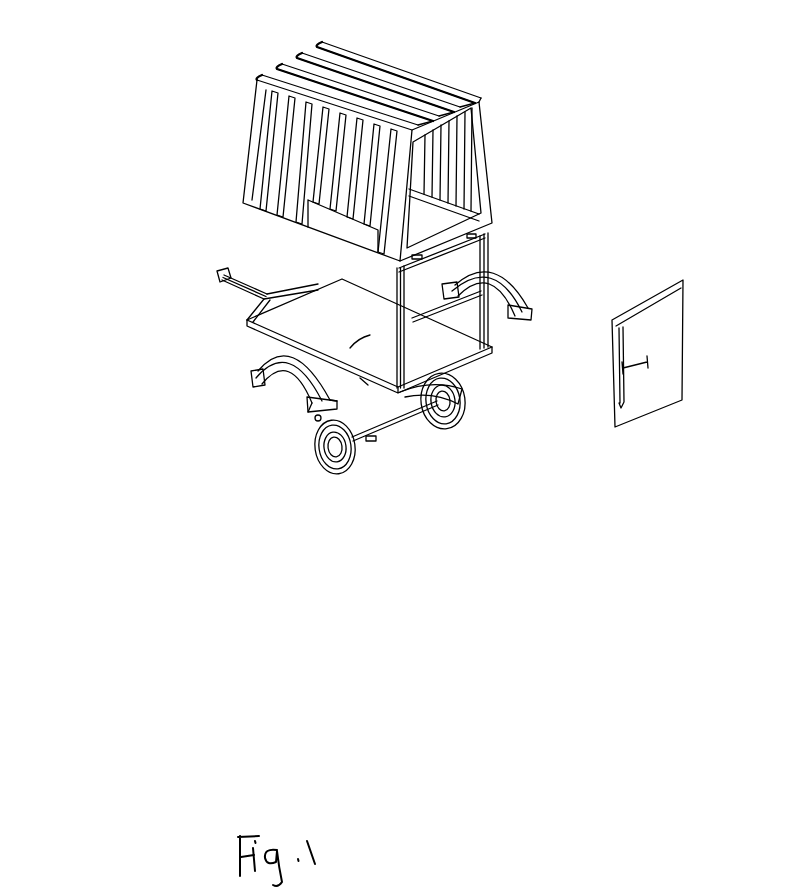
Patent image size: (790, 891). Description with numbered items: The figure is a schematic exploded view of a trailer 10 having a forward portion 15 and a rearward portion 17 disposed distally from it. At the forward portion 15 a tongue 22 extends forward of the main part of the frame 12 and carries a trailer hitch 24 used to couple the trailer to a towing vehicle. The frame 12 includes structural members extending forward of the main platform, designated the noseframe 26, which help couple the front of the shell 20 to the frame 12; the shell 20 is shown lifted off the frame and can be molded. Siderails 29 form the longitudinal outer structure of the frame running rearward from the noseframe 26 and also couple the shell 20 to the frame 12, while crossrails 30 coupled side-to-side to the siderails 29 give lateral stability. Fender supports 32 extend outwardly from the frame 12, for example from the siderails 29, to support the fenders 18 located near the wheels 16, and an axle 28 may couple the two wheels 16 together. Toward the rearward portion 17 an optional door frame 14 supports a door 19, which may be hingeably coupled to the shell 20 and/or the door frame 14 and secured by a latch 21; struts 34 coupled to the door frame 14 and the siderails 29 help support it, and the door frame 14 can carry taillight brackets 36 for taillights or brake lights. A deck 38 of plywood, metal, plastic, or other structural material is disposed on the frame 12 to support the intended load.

The trailer 10 is at (535, 88).
The frame 12 is at (258, 345).
The door frame 14 is at (488, 252).
The forward portion 15 is at (209, 258).
The wheels 16 is at (341, 476).
The rearward portion 17 is at (520, 352).
The fenders 18 is at (308, 409).
The door 19 is at (653, 290).
The shell 20 is at (494, 176).
The latch 21 is at (613, 403).
The tongue 22 is at (246, 301).
The trailer hitch 24 is at (219, 276).
The noseframe 26 is at (310, 283).
The axle 28 is at (417, 415).
The siderails 29 is at (287, 333).
The crossrails 30 is at (293, 356).
The fender supports 32 is at (370, 382).
The struts 34 is at (300, 380).
The taillight brackets 36 is at (487, 236).
The deck 38 is at (440, 347).